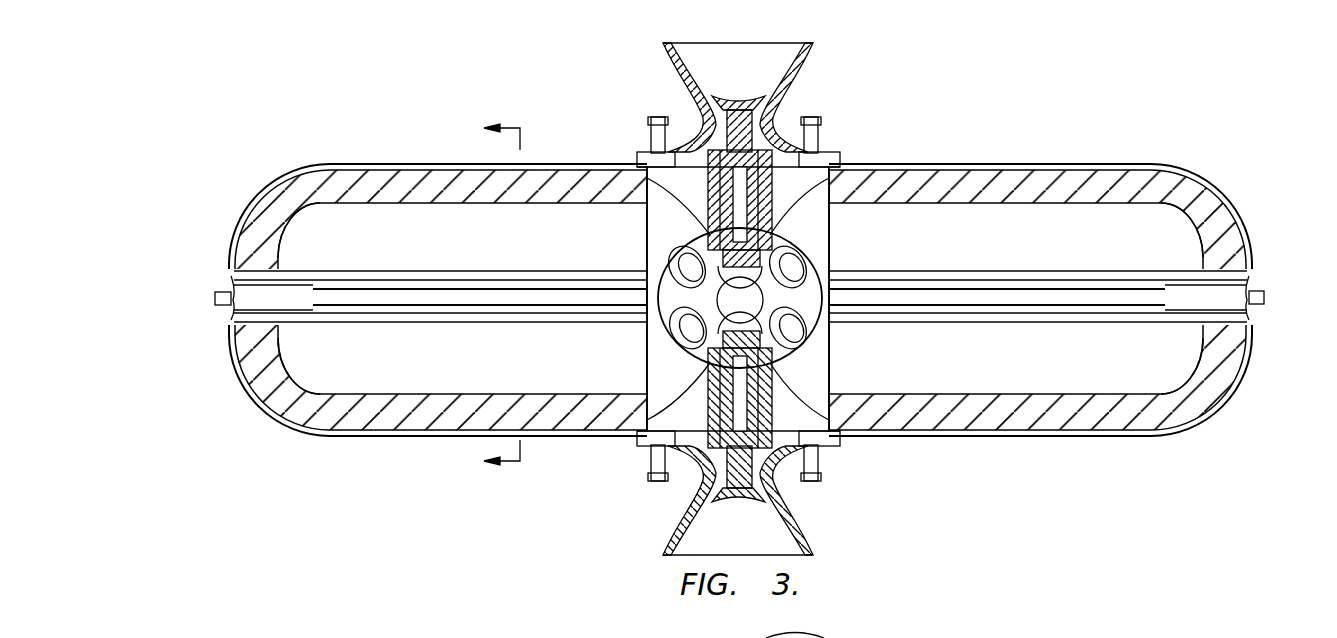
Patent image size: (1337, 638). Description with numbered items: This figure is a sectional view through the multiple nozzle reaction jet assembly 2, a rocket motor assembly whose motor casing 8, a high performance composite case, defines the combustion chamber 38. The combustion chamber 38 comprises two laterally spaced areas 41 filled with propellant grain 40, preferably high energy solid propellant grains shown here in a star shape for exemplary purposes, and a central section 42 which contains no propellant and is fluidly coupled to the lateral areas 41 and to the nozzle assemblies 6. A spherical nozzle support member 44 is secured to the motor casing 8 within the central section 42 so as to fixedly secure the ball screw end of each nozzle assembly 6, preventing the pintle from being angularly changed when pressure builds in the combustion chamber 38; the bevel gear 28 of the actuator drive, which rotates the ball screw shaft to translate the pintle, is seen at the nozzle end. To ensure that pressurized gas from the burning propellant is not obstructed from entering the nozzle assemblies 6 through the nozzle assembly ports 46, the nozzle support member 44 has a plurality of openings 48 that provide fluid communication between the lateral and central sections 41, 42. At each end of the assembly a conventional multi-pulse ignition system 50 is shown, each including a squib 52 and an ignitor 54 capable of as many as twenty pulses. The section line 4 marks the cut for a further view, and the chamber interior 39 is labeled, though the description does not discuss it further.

The multiple nozzle reaction jet assembly 2 is at (895, 82).
The section line 4- 4 is at (490, 296).
The nozzle assembly 6 is at (669, 67).
The motor casing 8 is at (328, 165).
The bevel gear 28 is at (697, 244).
The combustion chamber 38 is at (984, 247).
The chamber 39 is at (413, 367).
The propellant grain 40 is at (976, 415).
The laterally spaced area 41 is at (385, 228).
The central section 42 is at (668, 368).
The nozzle support member 44 is at (815, 470).
The nozzle assembly port 46 is at (647, 165).
The opening 48 is at (752, 307).
The multi-pulse ignition system 50 is at (211, 278).
The squib 52 is at (212, 305).
The ignitor 54 is at (297, 273).